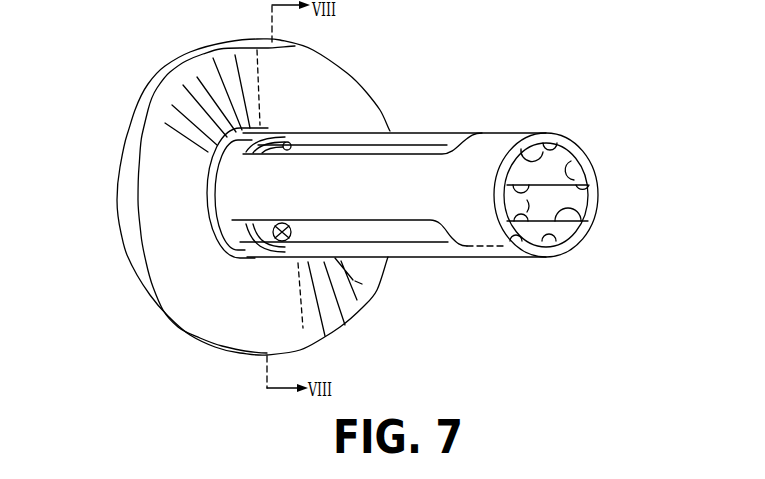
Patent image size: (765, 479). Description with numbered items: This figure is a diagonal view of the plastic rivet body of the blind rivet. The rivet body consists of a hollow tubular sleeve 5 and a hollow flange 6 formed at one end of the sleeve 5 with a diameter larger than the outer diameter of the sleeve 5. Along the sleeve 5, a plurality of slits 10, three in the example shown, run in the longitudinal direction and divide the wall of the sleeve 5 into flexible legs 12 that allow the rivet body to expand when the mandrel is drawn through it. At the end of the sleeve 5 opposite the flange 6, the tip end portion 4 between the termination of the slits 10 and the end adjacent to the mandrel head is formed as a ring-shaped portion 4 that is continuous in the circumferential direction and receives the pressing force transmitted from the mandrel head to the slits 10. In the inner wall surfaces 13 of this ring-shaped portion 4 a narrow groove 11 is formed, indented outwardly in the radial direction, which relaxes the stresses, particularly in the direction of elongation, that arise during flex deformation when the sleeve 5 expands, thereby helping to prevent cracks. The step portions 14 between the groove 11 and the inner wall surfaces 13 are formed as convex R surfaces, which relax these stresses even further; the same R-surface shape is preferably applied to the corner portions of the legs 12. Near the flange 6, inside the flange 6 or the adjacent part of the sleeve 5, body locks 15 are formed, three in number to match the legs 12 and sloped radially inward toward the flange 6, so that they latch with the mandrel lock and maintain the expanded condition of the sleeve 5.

The tip end portion 4 is at (471, 198).
The sleeve 5 is at (505, 140).
The flange 6 is at (140, 262).
The slits 10 is at (507, 185).
The groove 11 is at (557, 145).
The flexible legs 12 is at (326, 201).
The inner wall surfaces 13 is at (580, 172).
The step portions 14 is at (551, 146).
The body locks 15 is at (288, 149).